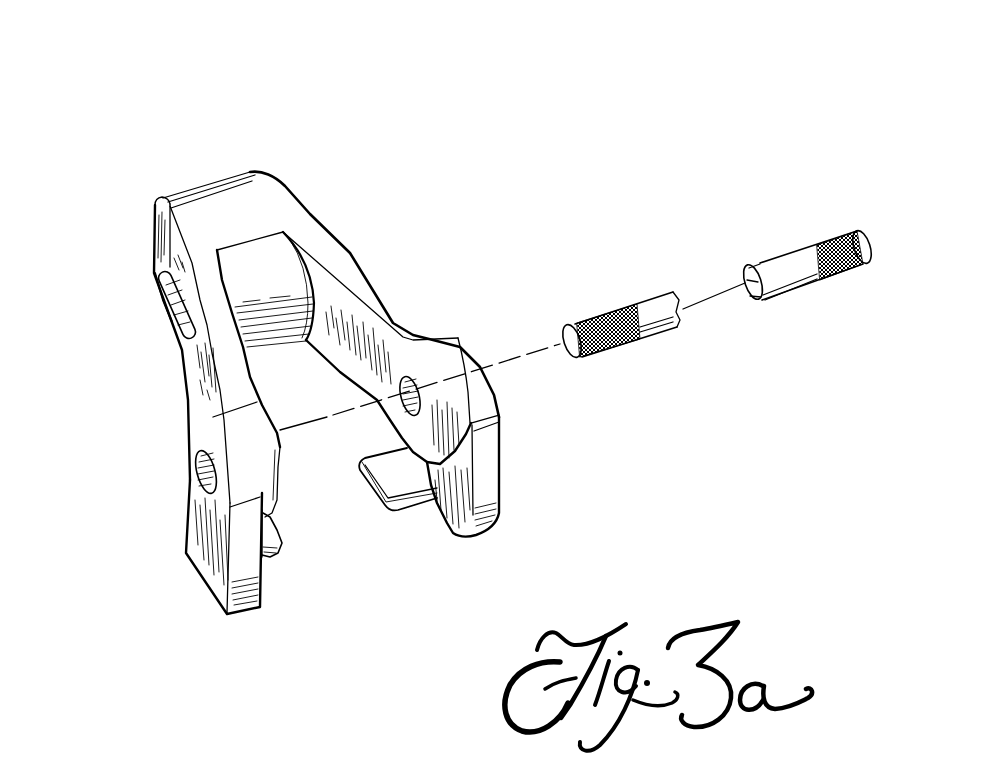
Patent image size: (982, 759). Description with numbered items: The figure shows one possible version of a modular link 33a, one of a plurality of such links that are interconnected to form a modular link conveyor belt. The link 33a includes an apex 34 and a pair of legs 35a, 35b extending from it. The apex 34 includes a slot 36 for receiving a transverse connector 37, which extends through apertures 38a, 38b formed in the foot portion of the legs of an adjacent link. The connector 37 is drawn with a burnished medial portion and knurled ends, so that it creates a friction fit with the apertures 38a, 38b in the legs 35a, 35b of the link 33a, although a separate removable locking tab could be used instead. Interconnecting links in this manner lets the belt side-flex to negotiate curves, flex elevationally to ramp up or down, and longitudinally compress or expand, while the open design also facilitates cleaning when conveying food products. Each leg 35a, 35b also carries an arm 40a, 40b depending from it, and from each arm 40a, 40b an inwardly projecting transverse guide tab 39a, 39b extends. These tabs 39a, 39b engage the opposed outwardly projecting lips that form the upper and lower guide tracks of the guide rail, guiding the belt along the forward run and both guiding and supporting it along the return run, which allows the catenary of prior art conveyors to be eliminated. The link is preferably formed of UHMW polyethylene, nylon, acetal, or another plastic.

The link 33a is at (342, 344).
The apex 34 is at (183, 199).
The leg 35a is at (226, 445).
The leg 35b is at (453, 394).
The slot 36 is at (175, 303).
The transverse connector 37 is at (787, 285).
The aperture 38a is at (198, 474).
The aperture 38b is at (408, 374).
The transverse tab 39a is at (283, 543).
The transverse tab 39b is at (398, 510).
The arm 40a is at (215, 600).
The arm 40b is at (495, 512).